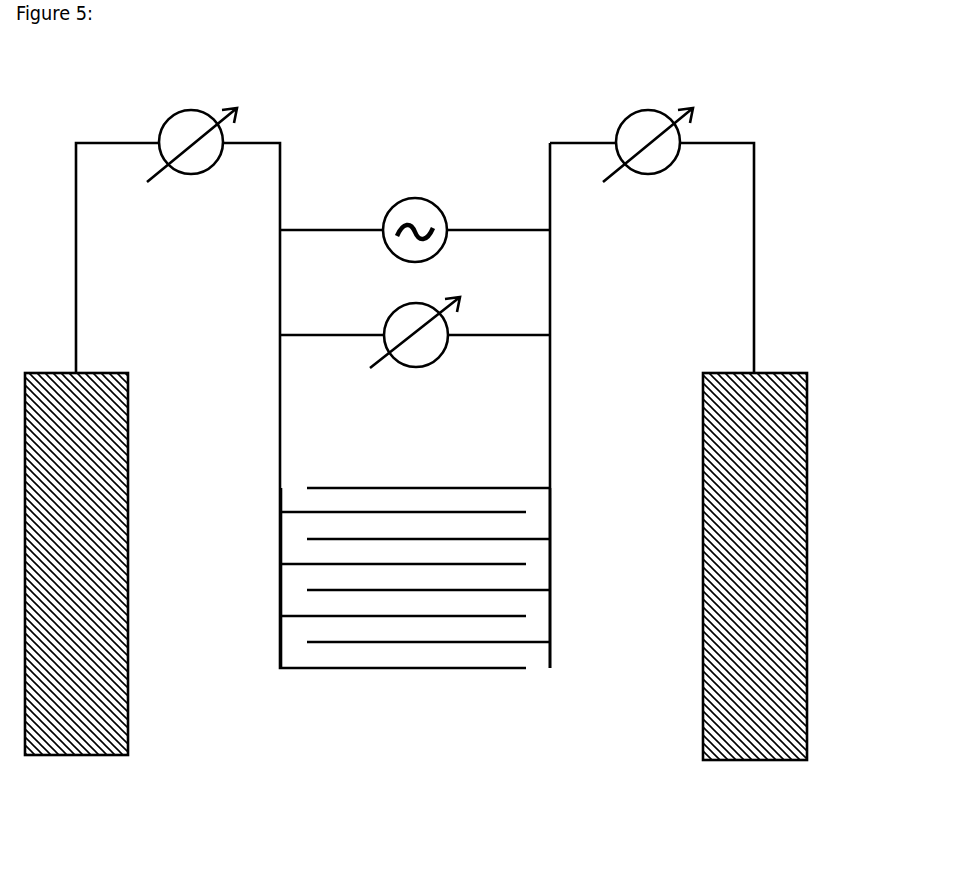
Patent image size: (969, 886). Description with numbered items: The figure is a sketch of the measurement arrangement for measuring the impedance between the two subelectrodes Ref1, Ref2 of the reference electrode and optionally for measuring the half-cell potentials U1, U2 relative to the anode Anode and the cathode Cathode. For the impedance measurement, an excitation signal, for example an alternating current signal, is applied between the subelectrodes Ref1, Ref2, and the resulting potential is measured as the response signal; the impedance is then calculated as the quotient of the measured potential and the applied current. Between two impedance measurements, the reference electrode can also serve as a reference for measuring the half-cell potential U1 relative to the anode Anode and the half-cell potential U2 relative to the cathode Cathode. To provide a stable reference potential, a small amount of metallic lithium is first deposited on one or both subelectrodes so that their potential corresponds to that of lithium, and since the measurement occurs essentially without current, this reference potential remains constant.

The half-cell potential U1 is at (192, 175).
The half-cell potential U2 is at (648, 175).
The subelectrode Ref1 is at (289, 610).
The subelectrode Ref2 is at (591, 610).
The anode Anode is at (75, 605).
The cathode Cathode is at (762, 597).